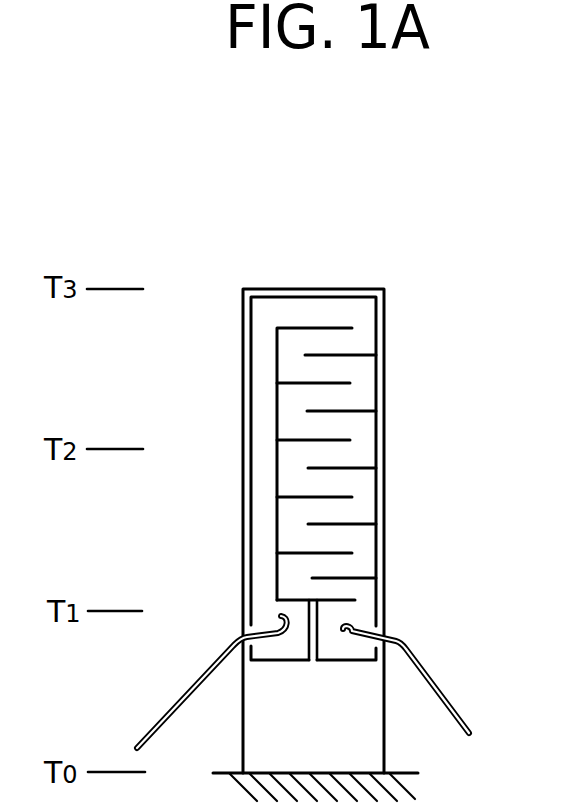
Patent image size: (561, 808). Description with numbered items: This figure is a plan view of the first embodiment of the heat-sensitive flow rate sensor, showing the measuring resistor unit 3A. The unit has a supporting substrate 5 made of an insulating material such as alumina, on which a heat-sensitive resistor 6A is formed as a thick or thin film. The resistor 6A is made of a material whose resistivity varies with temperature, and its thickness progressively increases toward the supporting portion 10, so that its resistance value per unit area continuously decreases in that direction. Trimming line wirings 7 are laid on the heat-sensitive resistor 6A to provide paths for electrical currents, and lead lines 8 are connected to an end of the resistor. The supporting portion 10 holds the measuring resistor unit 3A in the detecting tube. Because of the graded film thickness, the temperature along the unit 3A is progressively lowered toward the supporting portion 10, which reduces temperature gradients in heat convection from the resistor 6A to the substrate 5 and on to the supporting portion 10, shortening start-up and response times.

The measuring resistor unit 3A is at (316, 240).
The supporting substrate 5 is at (268, 735).
The heat-sensitive resistor 6A is at (386, 444).
The trimming line wirings 7 is at (276, 430).
The lead lines 8 is at (181, 688).
The supporting portion 10 is at (405, 786).